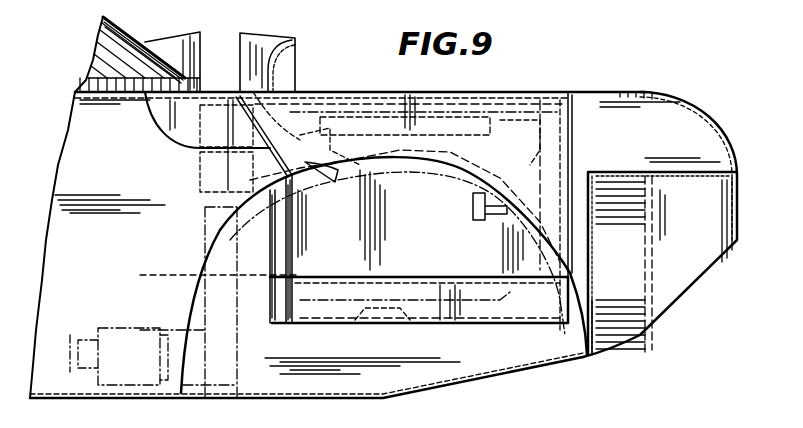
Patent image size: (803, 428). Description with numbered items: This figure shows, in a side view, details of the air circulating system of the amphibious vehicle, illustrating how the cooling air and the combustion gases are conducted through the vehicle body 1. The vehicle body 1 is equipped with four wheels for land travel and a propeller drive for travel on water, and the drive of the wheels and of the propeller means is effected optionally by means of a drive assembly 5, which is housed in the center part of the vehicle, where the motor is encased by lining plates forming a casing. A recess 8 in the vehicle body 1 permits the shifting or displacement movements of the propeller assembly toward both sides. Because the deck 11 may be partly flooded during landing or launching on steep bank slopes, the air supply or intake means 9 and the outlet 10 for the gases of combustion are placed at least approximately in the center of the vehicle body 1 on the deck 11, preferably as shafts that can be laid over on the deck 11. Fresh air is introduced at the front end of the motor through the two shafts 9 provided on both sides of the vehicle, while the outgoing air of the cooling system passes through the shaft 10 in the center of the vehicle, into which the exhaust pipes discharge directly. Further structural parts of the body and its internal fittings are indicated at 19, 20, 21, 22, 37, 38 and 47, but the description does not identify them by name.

The vehicle body 1 is at (60, 173).
The drive assembly 5 is at (347, 300).
The recess 8 is at (622, 349).
The air supply or intake means 9 is at (170, 48).
The outlet 10 is at (248, 58).
The deck 11 is at (342, 92).
The hatched post 19 is at (260, 270).
The arched frame 20 is at (210, 292).
The bottom deck 21 is at (228, 397).
The lower left unit 22 is at (116, 330).
The side panel 37 is at (572, 237).
The curved bracket 38 is at (296, 40).
The nose cowl 47 is at (722, 129).